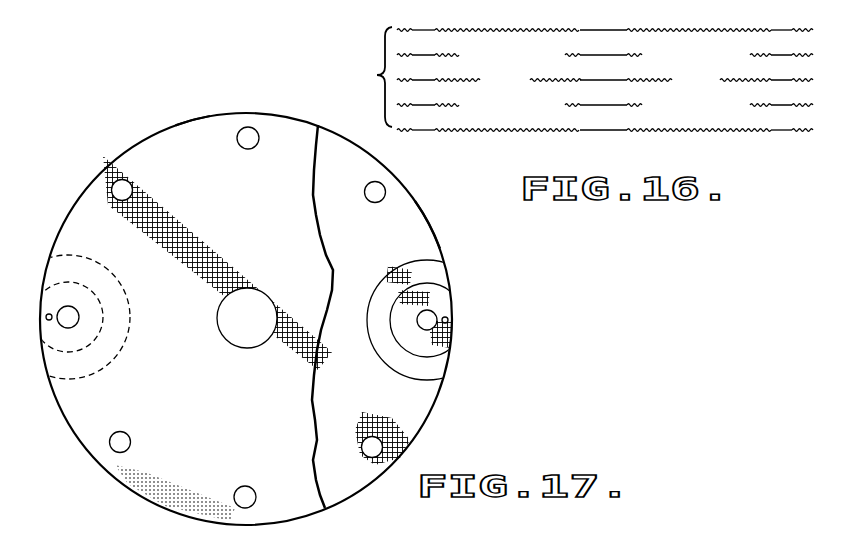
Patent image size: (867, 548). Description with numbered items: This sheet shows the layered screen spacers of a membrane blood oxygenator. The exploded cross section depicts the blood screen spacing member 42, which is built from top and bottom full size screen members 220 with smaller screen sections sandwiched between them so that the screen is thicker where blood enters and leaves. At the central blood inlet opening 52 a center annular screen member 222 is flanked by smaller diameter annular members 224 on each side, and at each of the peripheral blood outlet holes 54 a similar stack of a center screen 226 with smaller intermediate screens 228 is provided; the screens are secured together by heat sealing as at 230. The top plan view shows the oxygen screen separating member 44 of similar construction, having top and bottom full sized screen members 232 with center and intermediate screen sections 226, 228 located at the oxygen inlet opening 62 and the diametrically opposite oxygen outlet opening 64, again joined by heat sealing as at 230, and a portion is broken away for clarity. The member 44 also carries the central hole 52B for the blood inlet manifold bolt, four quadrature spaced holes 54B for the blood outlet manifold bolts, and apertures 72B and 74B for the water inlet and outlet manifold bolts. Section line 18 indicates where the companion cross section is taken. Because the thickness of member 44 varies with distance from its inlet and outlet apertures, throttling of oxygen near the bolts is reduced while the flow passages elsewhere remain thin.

In FIG. 16, the blood screen spacing member 42 is at (370, 75).
In FIG. 17, the oxygen screen separating member 44 is at (213, 104).
In FIG. 16, the central blood inlet opening 52 is at (600, 32).
In FIG. 16, the blood outlet holes 54 is at (415, 30).
In FIG. 16, the top and bottom full size screen members 220 is at (690, 31).
In FIG. 16, the center annular screen member 222 is at (648, 82).
In FIG. 16, the smaller diameter annular members 224 is at (635, 57).
In FIG. 16, the center screen 226 is at (458, 82).
In FIG. 17, the center screen 226 is at (401, 272).
In FIG. 16, the intermediate screens 228 is at (456, 57).
In FIG. 17, the intermediate screens 228 is at (405, 305).
In FIG. 17, the top and bottom full sized screen members 232 is at (180, 128).
In FIG. 17, the holes in oxygen screen spacing elements 54B is at (117, 183).
In FIG. 17, the aperture in oxygen screen separating member 74B is at (247, 131).
In FIG. 17, the aperture in oxygen screen separating member 72B is at (247, 490).
In FIG. 17, the central hole in oxygen screen spacing element 52B is at (230, 338).
In FIG. 17, the oxygen inlet opening 62 is at (70, 327).
In FIG. 17, the oxygen outlet opening 64 is at (448, 345).
In FIG. 17, the heat seal 230 is at (46, 322).
In FIG. 17, the section line 18- 18 is at (38, 318).